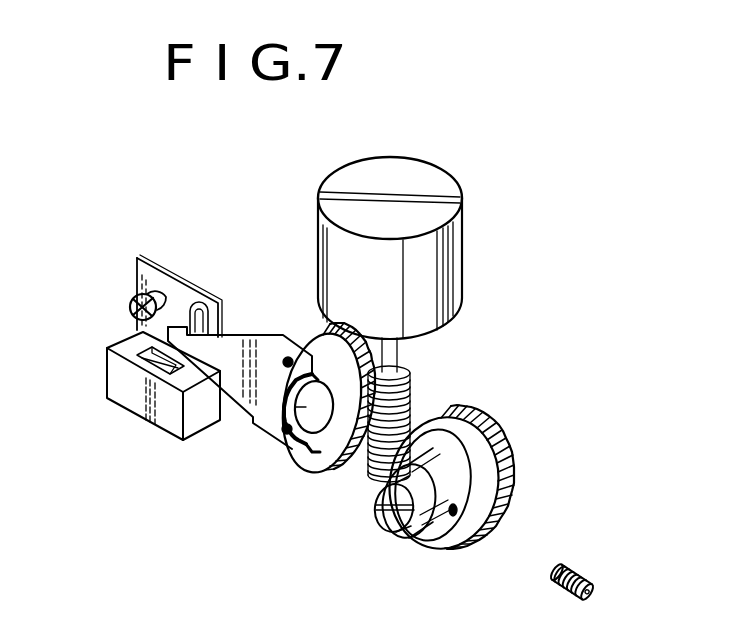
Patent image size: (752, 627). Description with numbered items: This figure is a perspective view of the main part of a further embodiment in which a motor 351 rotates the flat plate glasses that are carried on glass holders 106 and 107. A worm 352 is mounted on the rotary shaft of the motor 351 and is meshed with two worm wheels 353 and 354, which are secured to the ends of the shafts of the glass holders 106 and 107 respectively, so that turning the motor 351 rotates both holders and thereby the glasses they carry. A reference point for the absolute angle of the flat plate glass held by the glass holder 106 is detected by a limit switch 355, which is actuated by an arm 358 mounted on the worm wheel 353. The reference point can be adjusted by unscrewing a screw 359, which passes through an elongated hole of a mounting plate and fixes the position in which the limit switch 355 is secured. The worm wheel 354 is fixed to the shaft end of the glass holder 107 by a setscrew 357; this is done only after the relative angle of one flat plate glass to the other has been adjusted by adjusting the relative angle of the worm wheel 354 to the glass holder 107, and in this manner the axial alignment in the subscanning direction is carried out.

The motor 351 is at (456, 179).
The worm 352 is at (418, 385).
The worm wheel 353 is at (323, 472).
The worm wheel 354 is at (508, 470).
The limit switch 355 is at (125, 400).
The setscrew 357 is at (580, 567).
The arm 358 is at (237, 334).
The screw 359 is at (132, 299).
The glass holder 106 is at (280, 422).
The glass holder 107 is at (378, 527).